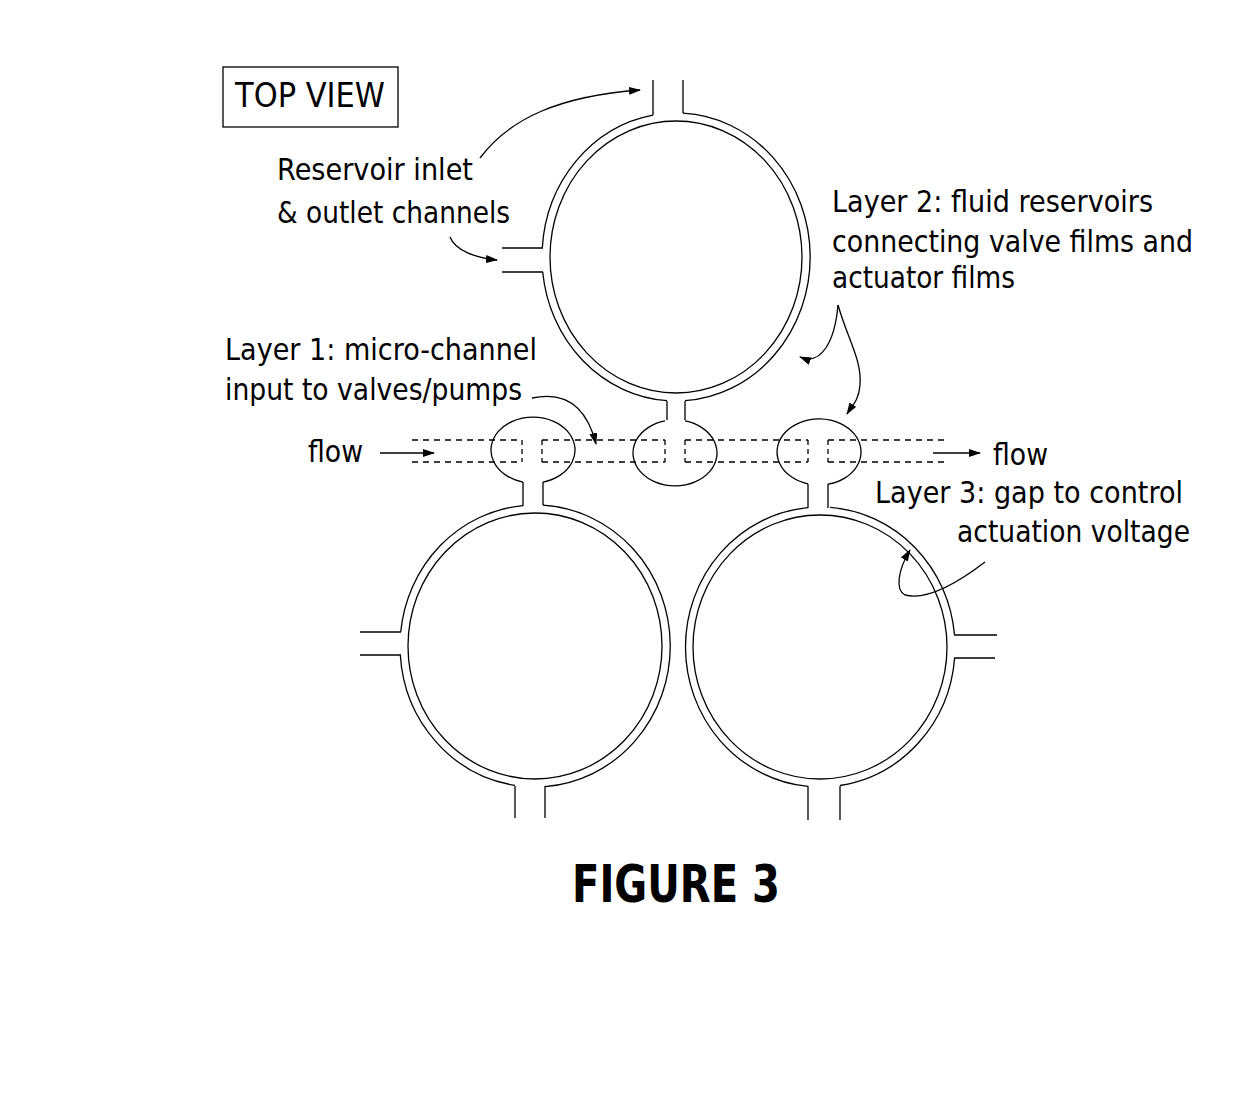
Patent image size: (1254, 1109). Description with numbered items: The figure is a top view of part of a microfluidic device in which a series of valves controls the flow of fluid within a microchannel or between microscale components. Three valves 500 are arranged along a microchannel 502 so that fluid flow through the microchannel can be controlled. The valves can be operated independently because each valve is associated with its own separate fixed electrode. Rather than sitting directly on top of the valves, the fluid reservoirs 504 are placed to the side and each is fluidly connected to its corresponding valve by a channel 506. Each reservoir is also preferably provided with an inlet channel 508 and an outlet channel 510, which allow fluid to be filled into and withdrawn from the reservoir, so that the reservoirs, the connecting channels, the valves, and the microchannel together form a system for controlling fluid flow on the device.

The valve 500 is at (822, 453).
The microchannel 502 is at (900, 453).
The fluid reservoir 504 is at (843, 667).
The channel 506 is at (820, 490).
The inlet channel 508 is at (972, 642).
The outlet channel 510 is at (820, 808).